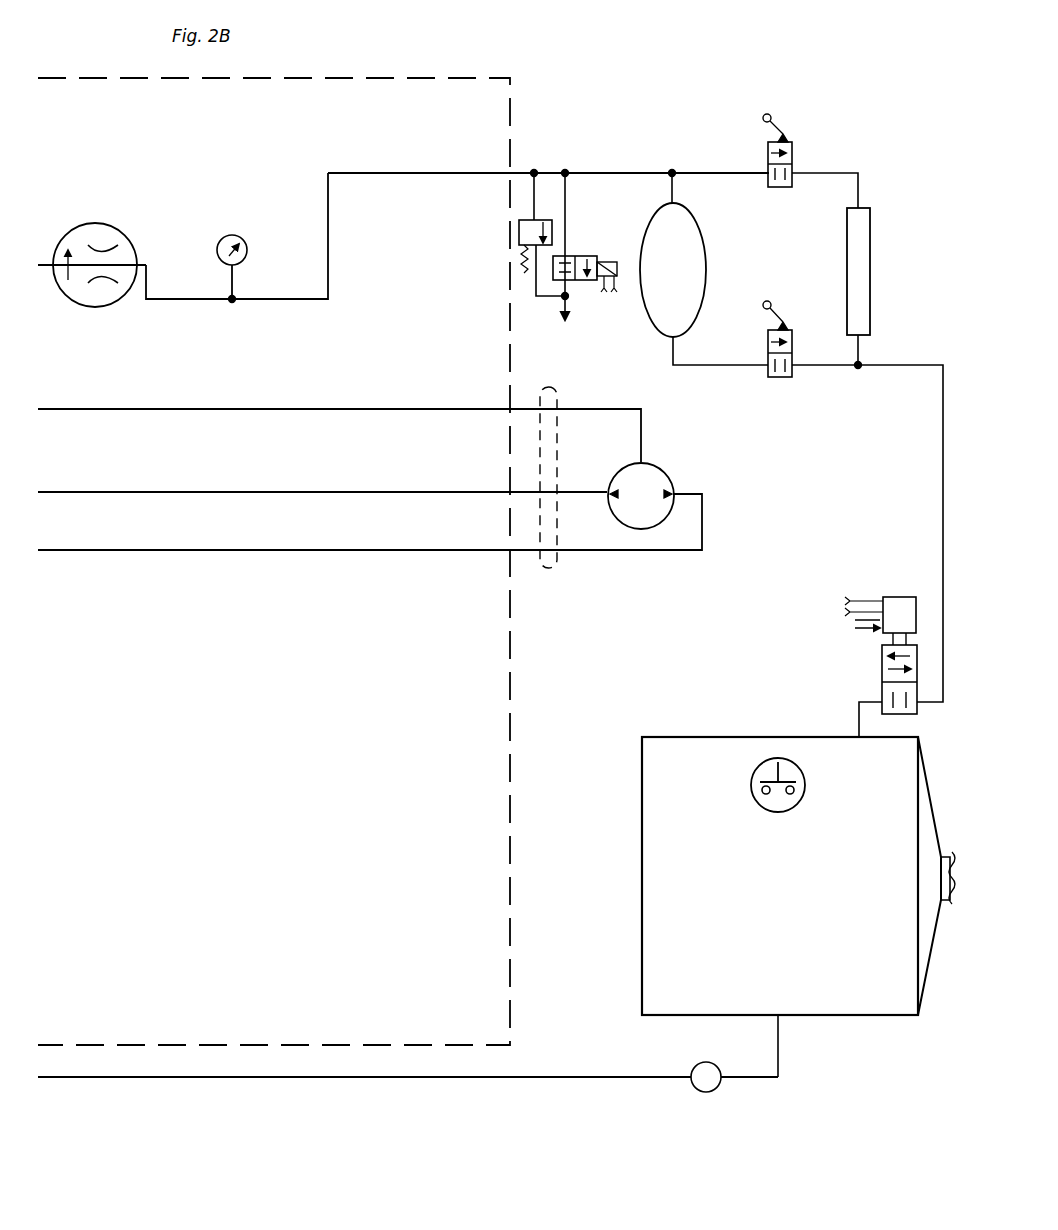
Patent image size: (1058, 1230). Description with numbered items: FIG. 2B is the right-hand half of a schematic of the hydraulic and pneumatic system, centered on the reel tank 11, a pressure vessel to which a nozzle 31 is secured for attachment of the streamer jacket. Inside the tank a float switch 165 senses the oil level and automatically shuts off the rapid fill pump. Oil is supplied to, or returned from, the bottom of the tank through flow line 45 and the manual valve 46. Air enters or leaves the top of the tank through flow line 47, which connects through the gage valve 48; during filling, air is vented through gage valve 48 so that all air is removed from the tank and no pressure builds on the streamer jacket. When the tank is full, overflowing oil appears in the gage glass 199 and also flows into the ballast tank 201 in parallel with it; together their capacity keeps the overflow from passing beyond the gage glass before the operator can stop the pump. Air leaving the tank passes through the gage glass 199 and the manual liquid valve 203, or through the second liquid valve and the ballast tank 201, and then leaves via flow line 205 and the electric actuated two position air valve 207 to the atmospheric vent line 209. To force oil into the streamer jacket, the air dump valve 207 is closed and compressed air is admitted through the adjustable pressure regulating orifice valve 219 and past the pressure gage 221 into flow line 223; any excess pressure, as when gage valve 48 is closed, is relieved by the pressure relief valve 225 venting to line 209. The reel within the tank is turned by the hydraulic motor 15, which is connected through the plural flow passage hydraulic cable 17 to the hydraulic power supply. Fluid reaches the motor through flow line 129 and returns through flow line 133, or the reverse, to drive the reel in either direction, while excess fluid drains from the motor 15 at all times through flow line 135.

The adjustable pressure regulating orifice valve 219 is at (96, 222).
The pressure gage 221 is at (234, 236).
The flow line 223 is at (262, 300).
The pressure relief valve 225 is at (519, 228).
The flow line / liquid valve 205 is at (566, 192).
The electric actuated two position air valve 207 is at (577, 256).
The atmospheric vent line 209 is at (572, 303).
The ballast tank 201 is at (687, 294).
The liquid valve 203 is at (792, 162).
The gage glass 199 is at (870, 258).
The flow line 135 is at (350, 408).
The flow line 133 is at (344, 490).
The flow line 129 is at (353, 548).
The hydraulic motor 15 is at (665, 472).
The plural flow passage hydraulic cable 17 is at (555, 568).
The gage valve 48 is at (882, 668).
The flow line 47 is at (859, 726).
The reel tank 11 is at (862, 1020).
The nozzle 31 is at (945, 852).
The float switch 165 is at (775, 812).
The flow line 45 is at (282, 1078).
The valve 46 is at (710, 1092).